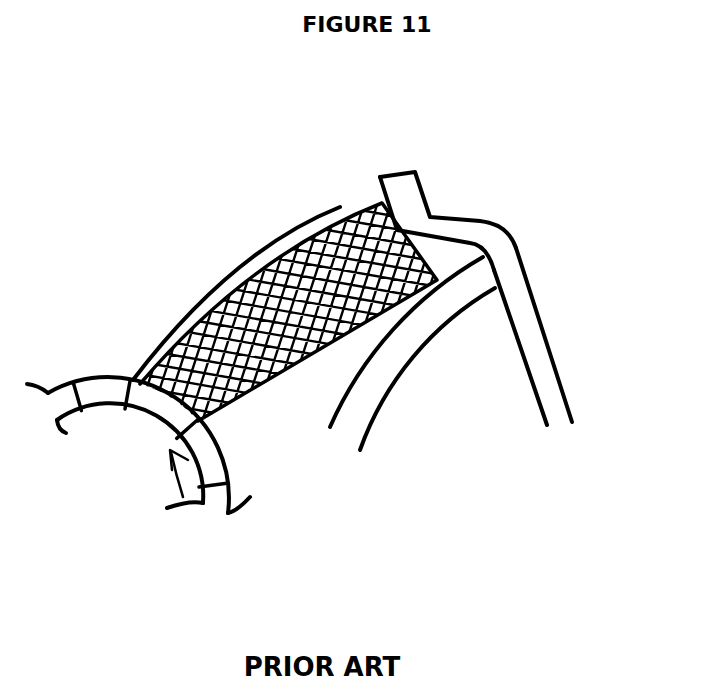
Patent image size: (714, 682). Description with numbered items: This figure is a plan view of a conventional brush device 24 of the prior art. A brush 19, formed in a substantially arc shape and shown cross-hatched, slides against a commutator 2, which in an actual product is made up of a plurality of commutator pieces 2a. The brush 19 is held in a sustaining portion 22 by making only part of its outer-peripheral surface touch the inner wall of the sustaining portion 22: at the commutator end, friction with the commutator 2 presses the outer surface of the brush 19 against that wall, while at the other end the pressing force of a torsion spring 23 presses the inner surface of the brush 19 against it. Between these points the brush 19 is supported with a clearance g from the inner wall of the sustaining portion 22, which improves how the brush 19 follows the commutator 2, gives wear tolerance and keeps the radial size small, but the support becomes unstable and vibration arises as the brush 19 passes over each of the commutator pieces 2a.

The commutator 2 is at (137, 427).
The commutator pieces 2a is at (108, 393).
The brush 19 is at (272, 318).
The sustaining portion 22 is at (292, 233).
The clearance g is at (340, 218).
The torsion spring 23 is at (532, 348).
The brush device 24 is at (531, 273).